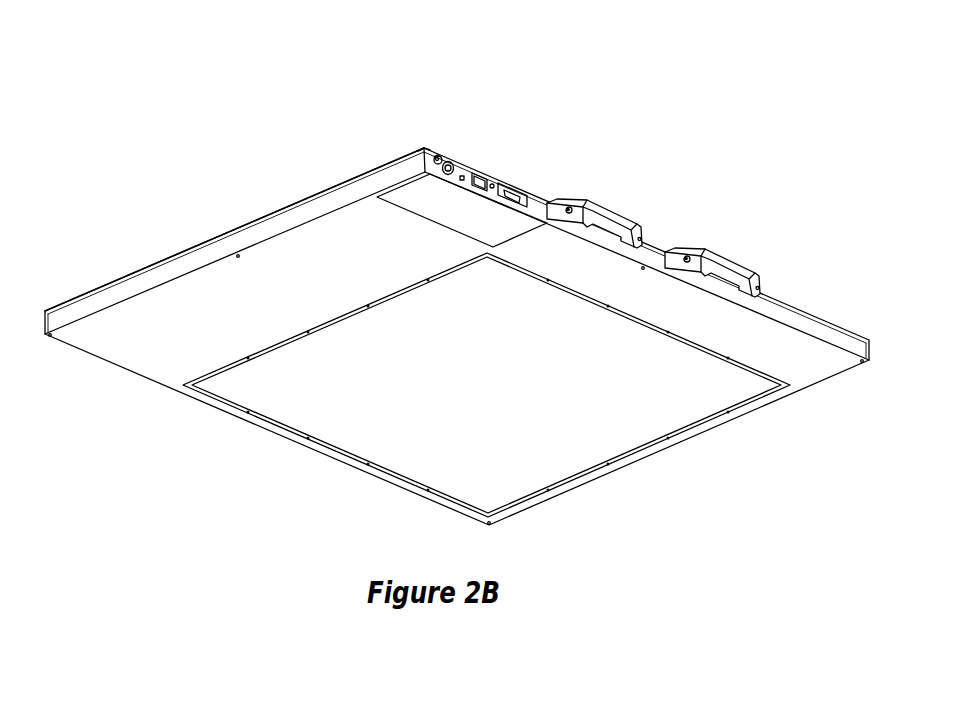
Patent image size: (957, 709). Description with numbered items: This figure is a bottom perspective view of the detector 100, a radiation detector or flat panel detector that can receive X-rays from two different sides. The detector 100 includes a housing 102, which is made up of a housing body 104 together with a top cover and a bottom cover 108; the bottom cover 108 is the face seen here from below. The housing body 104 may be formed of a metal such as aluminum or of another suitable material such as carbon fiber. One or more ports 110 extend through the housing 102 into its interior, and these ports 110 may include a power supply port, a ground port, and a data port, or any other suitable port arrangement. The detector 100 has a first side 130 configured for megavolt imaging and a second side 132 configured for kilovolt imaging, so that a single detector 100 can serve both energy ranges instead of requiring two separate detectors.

The detector 100 is at (457, 290).
The housing 102 is at (110, 283).
The housing body 104 is at (162, 271).
The bottom cover 108 is at (162, 363).
The ports 110 is at (483, 158).
The first side 130 is at (409, 146).
The second side 132 is at (373, 404).